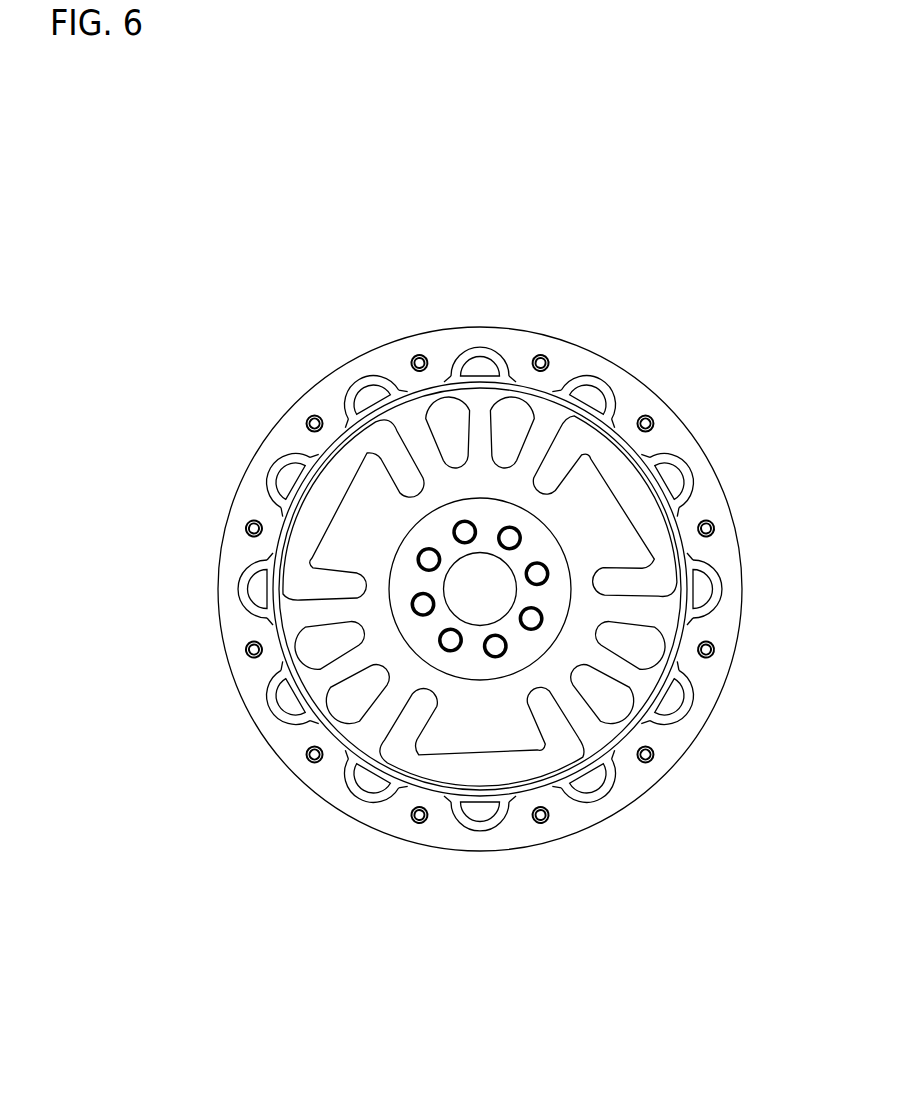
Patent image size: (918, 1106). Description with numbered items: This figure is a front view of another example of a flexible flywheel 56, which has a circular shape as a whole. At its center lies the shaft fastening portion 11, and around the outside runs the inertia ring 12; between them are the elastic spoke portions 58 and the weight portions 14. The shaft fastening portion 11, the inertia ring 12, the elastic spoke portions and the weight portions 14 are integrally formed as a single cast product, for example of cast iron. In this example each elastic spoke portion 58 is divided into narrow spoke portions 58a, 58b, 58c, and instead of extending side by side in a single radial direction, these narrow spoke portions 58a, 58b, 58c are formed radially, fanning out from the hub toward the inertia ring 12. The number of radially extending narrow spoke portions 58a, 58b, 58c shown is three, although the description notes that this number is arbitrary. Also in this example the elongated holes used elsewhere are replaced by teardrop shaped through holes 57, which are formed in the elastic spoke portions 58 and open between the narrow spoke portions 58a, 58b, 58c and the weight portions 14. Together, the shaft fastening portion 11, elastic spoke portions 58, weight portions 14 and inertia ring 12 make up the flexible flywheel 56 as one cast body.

The shaft fastening portion 11 is at (548, 553).
The inertia ring 12 is at (290, 402).
The weight portion 14 is at (342, 438).
The flexible flywheel 56 is at (694, 373).
The teardrop shaped through hole 57 is at (640, 625).
The elastic spoke portion 58 is at (582, 272).
The narrow spoke portion 58a is at (422, 440).
The narrow spoke portion 58b is at (483, 430).
The narrow spoke portion 58c is at (547, 442).